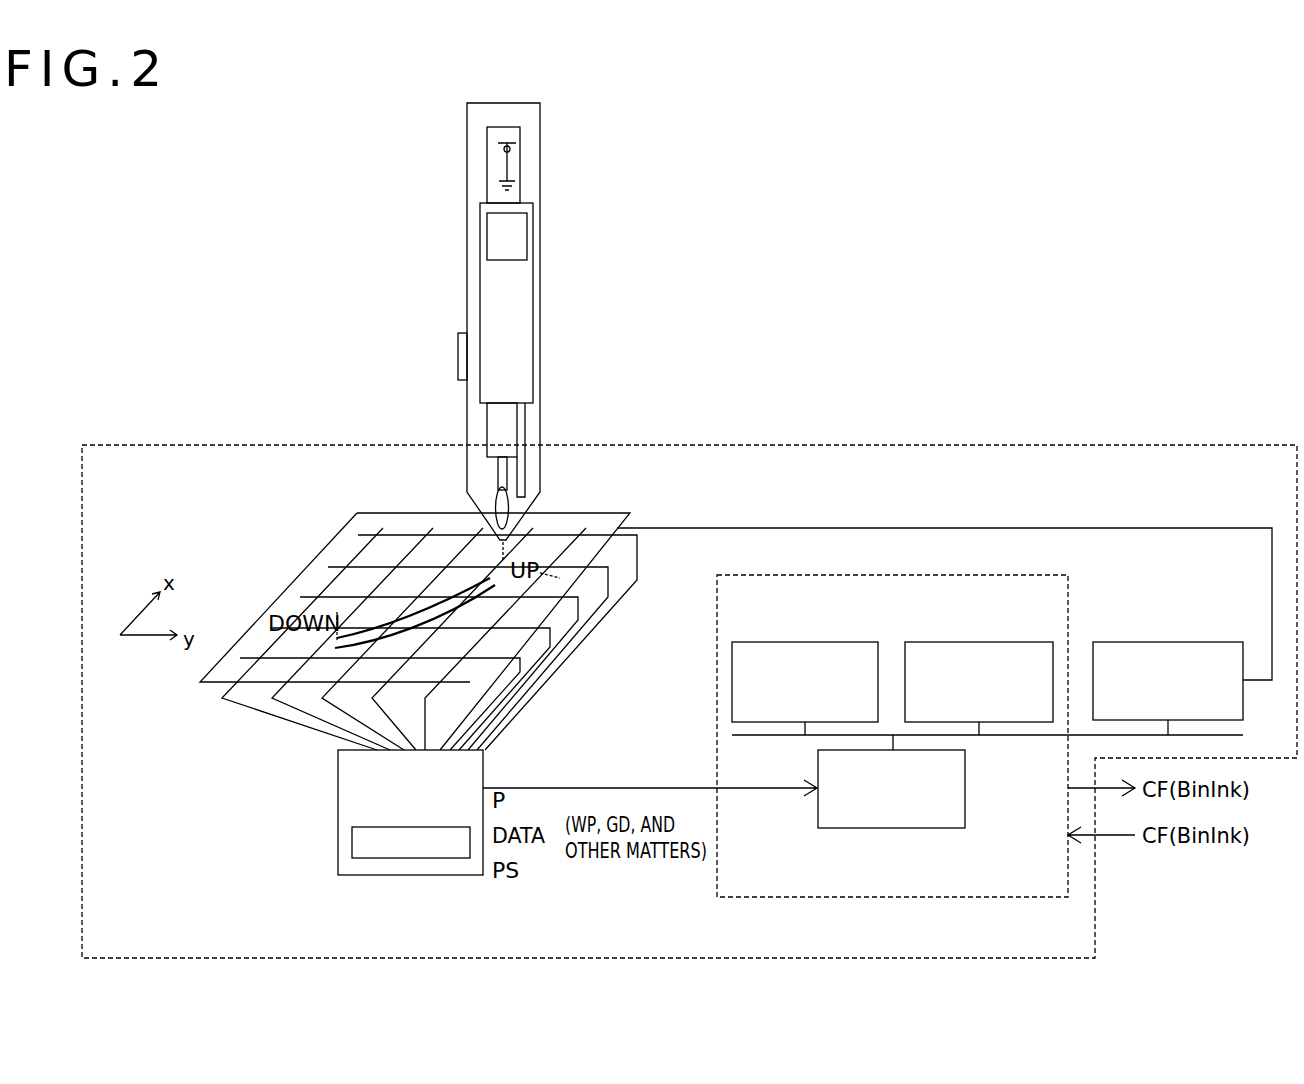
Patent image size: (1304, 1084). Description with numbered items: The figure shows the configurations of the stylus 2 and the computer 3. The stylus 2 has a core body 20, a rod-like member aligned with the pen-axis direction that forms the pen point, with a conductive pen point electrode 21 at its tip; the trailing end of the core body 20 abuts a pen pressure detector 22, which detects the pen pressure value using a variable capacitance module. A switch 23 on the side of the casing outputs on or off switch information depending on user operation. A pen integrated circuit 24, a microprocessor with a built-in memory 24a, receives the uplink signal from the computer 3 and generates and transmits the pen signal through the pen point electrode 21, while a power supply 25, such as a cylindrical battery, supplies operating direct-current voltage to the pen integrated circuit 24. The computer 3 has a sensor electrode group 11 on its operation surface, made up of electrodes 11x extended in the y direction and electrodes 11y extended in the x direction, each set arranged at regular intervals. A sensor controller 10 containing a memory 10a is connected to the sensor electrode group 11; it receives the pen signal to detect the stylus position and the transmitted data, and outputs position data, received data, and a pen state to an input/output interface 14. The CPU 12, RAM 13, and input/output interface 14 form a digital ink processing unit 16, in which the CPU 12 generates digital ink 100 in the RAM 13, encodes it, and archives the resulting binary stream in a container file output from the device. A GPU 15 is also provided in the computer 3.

The stylus 2 is at (499, 103).
The power supply 25 is at (520, 140).
The pen integrated circuit 24 is at (533, 320).
The memory 24a is at (533, 240).
The switch 23 is at (458, 363).
The pen pressure detector 22 is at (487, 425).
The core body 20 is at (498, 472).
The pen point electrode 21 is at (495, 508).
The sensor electrode group 11 is at (598, 513).
The electrodes 11x is at (565, 513).
The electrodes 11y is at (355, 540).
The computer 3 is at (828, 445).
The sensor controller 10 is at (408, 878).
The memory 10a is at (352, 843).
The digital ink processing unit 16 is at (893, 900).
The central processing unit 12 is at (805, 642).
The random access memory 13 is at (980, 642).
The graphics processing unit 15 is at (1168, 642).
The input/output interface 14 is at (893, 830).
The digital ink 100 is at (1016, 657).